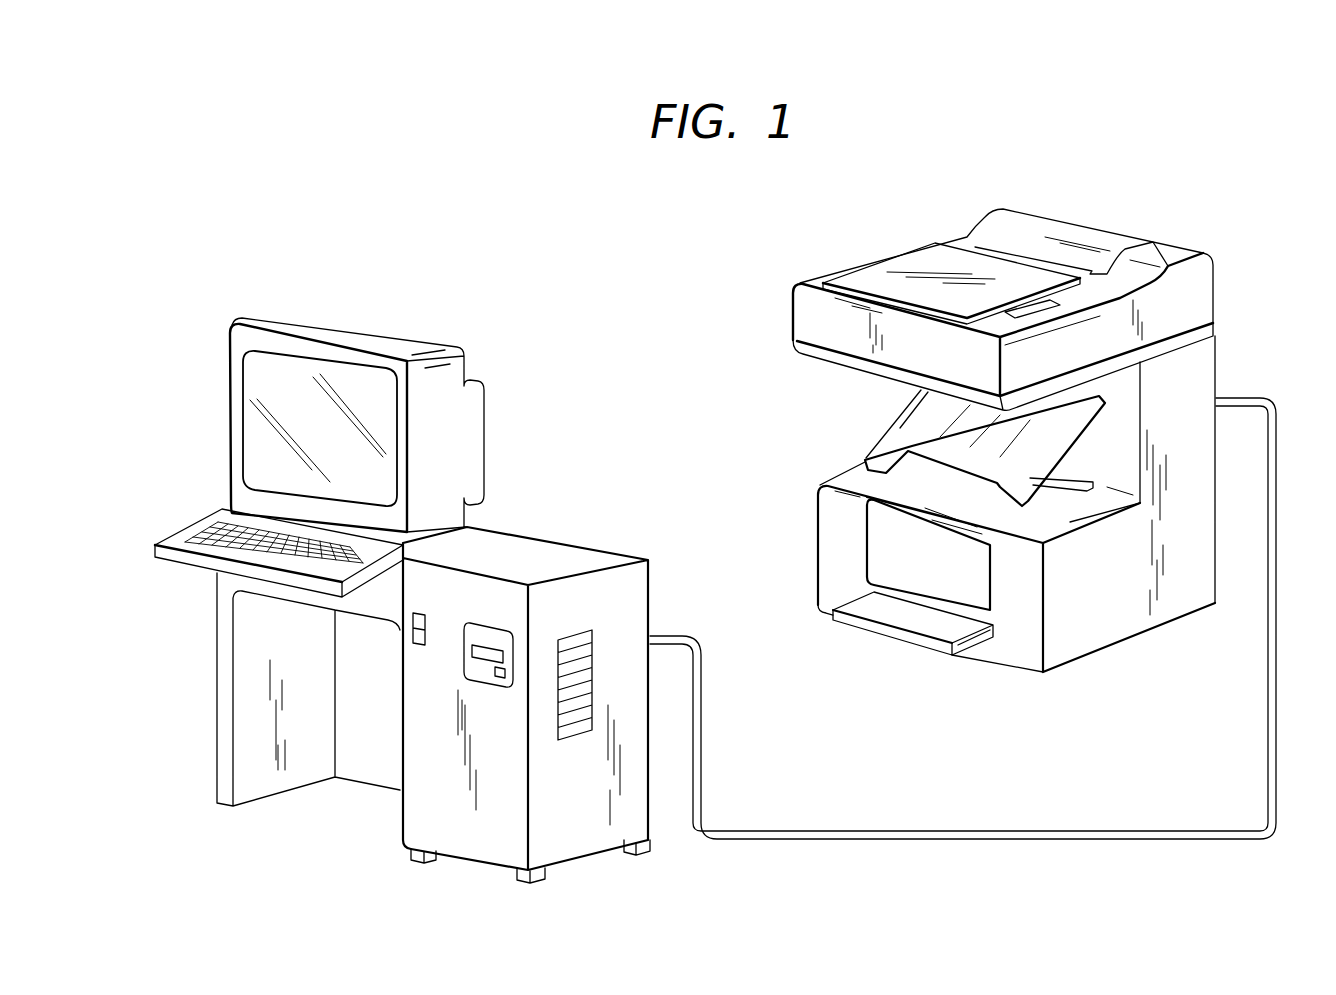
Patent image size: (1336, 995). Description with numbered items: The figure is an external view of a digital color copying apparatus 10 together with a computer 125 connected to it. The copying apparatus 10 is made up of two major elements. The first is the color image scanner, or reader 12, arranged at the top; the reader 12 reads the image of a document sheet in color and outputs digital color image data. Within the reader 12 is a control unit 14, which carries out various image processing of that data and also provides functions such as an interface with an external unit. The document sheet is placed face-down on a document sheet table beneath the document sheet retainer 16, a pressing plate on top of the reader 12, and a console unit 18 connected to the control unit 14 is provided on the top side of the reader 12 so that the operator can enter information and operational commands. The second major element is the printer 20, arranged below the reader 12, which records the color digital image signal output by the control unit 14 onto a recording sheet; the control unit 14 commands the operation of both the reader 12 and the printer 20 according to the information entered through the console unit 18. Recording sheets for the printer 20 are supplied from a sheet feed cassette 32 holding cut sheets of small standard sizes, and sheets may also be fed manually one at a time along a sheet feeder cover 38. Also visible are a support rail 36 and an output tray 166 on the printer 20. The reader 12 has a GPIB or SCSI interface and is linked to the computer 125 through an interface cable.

The color digital copying apparatus 10 is at (1042, 435).
The color image scanner (reader) 12 is at (1045, 305).
The control unit 14 is at (1207, 312).
The document sheet retainer 16 is at (863, 277).
The console unit 18 is at (1055, 303).
The printer 20 is at (1023, 524).
The sheet feed cassette 32 is at (907, 633).
The tray support rail 36 is at (1083, 470).
The sheet feeder cover 38 is at (973, 594).
The computer 125 is at (565, 548).
The output tray 166 is at (875, 445).